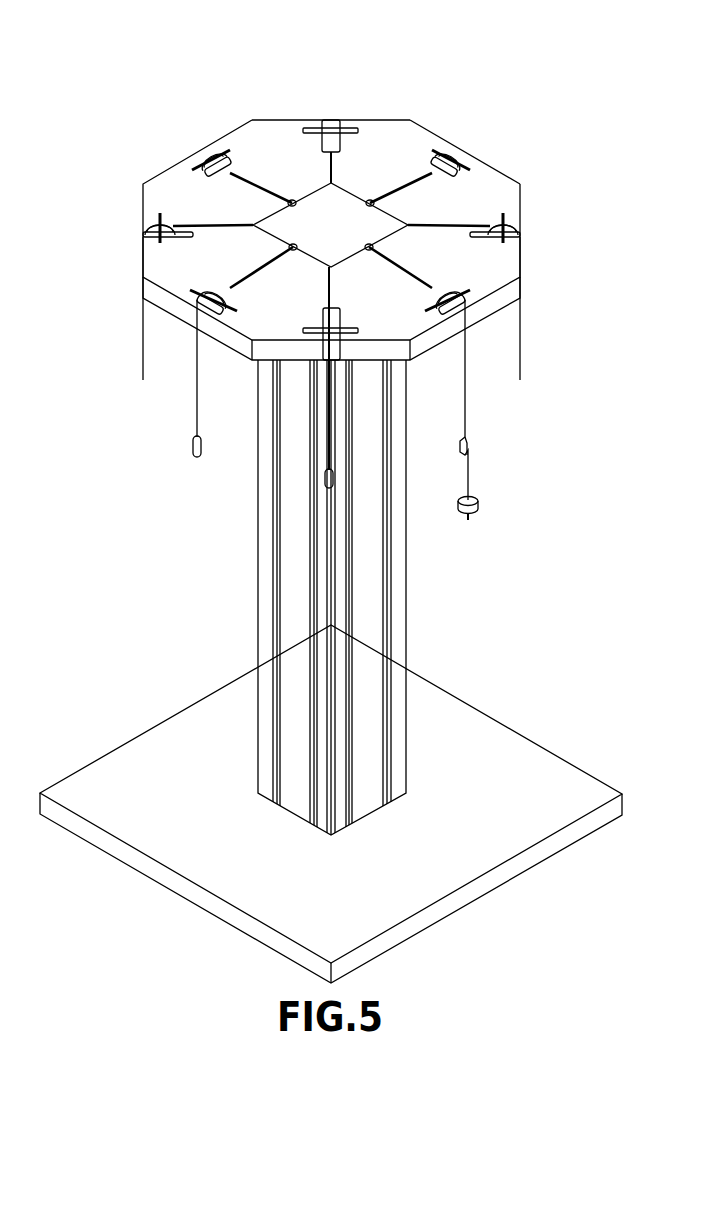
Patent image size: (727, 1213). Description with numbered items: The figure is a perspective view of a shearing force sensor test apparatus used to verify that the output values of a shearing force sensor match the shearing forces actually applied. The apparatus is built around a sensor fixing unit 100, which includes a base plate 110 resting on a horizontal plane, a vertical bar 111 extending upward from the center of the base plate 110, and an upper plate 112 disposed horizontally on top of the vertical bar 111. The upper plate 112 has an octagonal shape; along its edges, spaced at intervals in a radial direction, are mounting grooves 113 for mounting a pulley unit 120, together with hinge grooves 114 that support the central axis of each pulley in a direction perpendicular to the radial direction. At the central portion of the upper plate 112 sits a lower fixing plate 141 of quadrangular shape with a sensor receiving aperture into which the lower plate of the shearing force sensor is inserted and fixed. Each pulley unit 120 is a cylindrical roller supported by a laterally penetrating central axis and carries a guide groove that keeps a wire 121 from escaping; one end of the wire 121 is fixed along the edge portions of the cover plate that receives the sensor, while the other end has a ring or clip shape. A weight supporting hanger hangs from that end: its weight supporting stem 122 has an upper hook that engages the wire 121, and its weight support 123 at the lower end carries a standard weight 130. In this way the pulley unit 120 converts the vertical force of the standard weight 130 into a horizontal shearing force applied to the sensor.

The sensor fixing unit 100 is at (147, 464).
The base plate 110 is at (215, 720).
The vertical bar 111 is at (263, 563).
The upper plate 112 is at (403, 137).
The mounting groove 113 is at (185, 222).
The hinge groove 114 is at (197, 155).
The pulley unit 120 is at (212, 148).
The wire 121 is at (257, 177).
The weight supporting stem 122 is at (470, 472).
The weight support 123 is at (470, 518).
The standard weight 130 is at (480, 492).
The lower fixing plate 141 is at (522, 185).